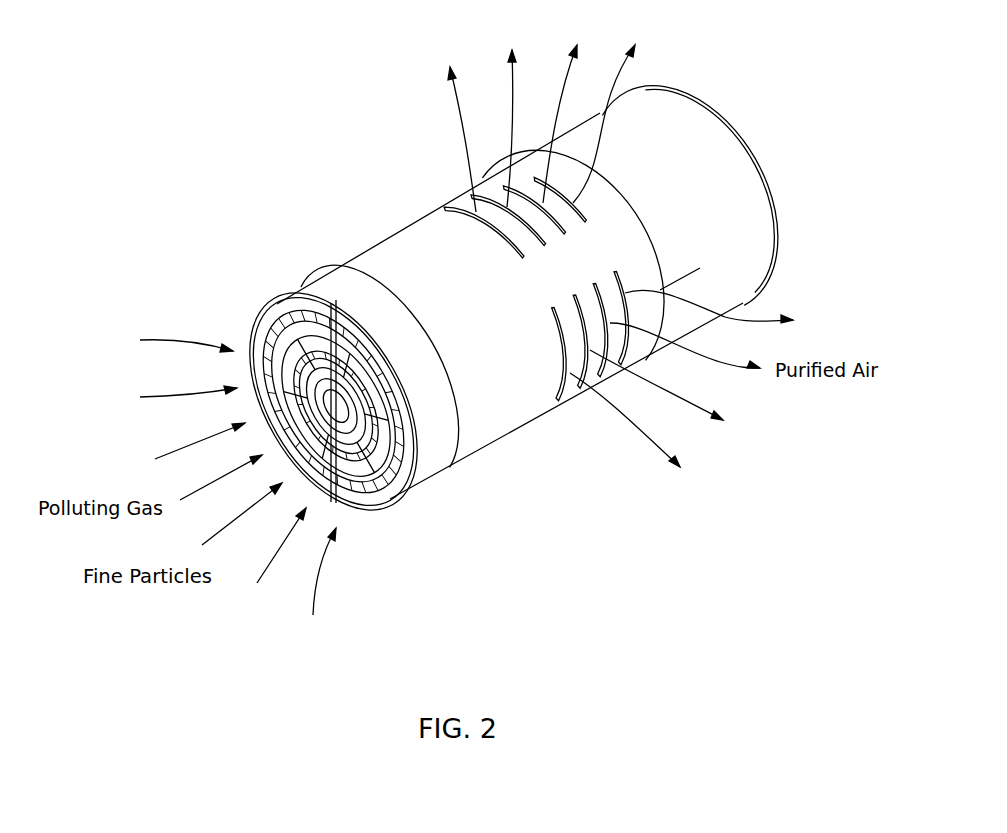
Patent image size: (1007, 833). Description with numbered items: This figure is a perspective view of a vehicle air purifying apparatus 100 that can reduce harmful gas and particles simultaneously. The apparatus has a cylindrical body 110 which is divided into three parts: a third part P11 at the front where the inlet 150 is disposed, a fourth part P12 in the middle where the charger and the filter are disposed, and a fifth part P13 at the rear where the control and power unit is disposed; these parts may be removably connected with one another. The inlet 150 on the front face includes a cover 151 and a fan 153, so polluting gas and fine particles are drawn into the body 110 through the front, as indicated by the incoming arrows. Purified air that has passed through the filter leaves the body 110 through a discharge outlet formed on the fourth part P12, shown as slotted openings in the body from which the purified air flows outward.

The vehicle air purifying apparatus 100 is at (410, 148).
The body 110 is at (723, 535).
The inlet 150 is at (418, 582).
The cover 151 is at (363, 506).
The fan 153 is at (397, 497).
The third part P11 is at (433, 449).
The fourth part P12 is at (525, 405).
The fifth part P13 is at (737, 290).